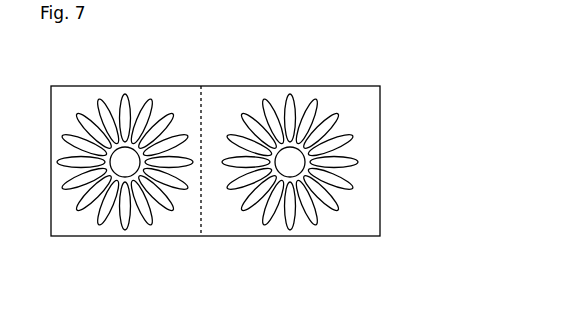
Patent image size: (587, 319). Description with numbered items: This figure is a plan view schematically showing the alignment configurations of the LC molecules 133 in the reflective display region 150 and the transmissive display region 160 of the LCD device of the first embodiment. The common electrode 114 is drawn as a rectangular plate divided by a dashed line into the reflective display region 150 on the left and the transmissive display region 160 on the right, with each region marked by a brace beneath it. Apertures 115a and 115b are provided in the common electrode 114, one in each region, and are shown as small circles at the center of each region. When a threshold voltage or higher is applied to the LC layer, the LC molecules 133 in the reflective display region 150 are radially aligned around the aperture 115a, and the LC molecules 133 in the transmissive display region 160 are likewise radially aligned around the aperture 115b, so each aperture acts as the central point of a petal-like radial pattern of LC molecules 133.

The common electrode 114 is at (372, 219).
The aperture 115a is at (122, 157).
The aperture 115b is at (287, 158).
The LC molecules 133 is at (354, 162).
The reflective display region 150 is at (120, 168).
The transmissive display region 160 is at (320, 168).